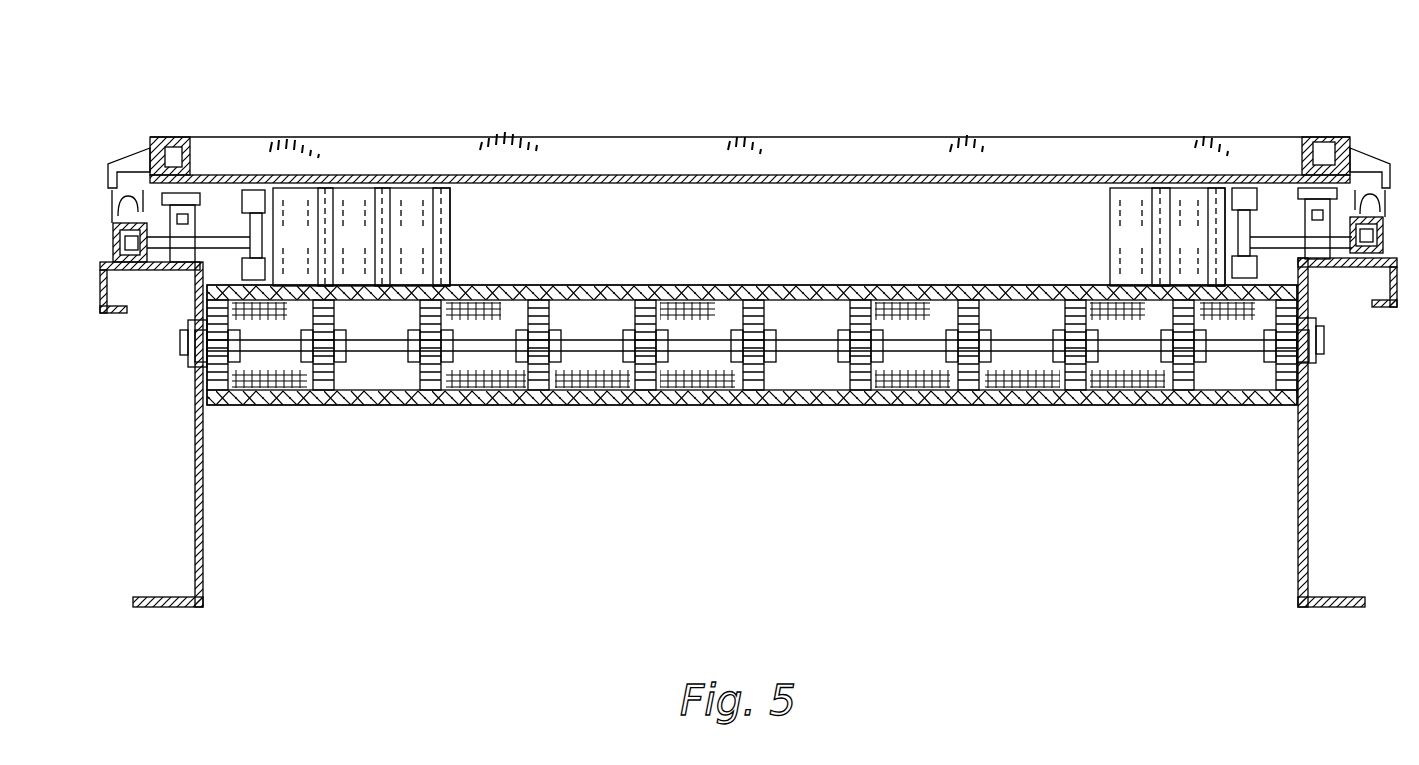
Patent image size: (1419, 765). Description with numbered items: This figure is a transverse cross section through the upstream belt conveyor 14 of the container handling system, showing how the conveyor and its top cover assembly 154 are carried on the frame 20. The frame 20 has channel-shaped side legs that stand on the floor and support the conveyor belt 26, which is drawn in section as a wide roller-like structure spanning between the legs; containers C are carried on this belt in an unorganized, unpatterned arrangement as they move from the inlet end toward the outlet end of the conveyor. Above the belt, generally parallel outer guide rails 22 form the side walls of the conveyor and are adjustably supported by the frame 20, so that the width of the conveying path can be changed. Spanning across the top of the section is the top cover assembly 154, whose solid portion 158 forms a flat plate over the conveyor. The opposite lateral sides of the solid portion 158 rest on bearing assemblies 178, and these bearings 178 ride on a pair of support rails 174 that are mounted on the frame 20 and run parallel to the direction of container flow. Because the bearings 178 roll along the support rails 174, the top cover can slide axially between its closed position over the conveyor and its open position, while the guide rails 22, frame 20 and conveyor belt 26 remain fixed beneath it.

The upstream belt conveyor 14 is at (521, 124).
The solid portion 158 is at (800, 145).
The top cover assembly 154 is at (1222, 121).
The bearing assemblies 178 is at (118, 192).
The outer guide rails 22 is at (235, 212).
The containers C is at (425, 237).
The support rails 174 is at (115, 228).
The frame 20 is at (195, 507).
The conveyor belt 26 is at (547, 408).